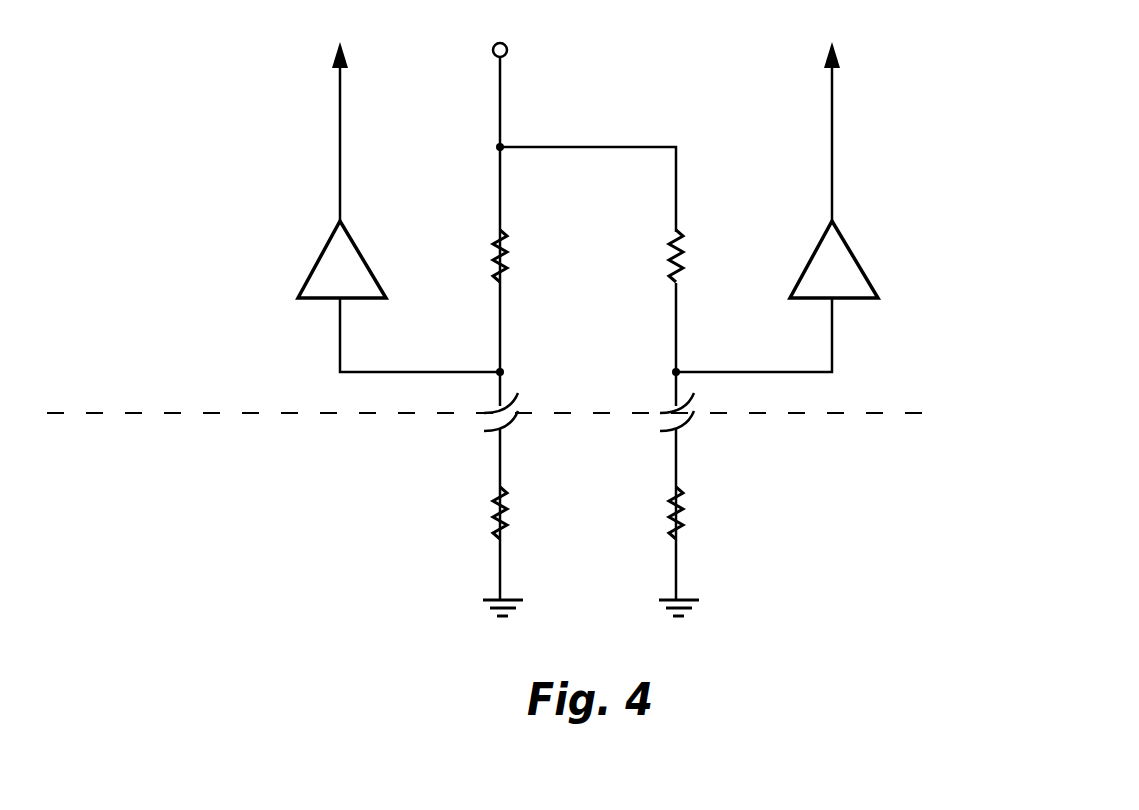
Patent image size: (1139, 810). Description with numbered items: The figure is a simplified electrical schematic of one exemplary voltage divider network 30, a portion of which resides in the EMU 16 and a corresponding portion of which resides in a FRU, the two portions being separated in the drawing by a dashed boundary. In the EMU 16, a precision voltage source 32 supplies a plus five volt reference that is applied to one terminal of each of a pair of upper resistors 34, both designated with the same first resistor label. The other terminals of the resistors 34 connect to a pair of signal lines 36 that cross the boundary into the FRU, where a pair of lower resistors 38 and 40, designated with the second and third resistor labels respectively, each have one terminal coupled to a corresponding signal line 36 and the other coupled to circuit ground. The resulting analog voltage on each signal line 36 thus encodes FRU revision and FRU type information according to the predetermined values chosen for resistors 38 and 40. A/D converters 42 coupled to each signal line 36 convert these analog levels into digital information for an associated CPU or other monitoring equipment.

The EMU 16 is at (950, 128).
The voltage divider network 30 is at (838, 434).
The voltage source 32 is at (500, 115).
The resistors 34 is at (505, 278).
The signal lines 36 is at (498, 442).
The resistor 38 is at (497, 517).
The resistor 40 is at (680, 538).
The A/D converters 42 is at (368, 263).